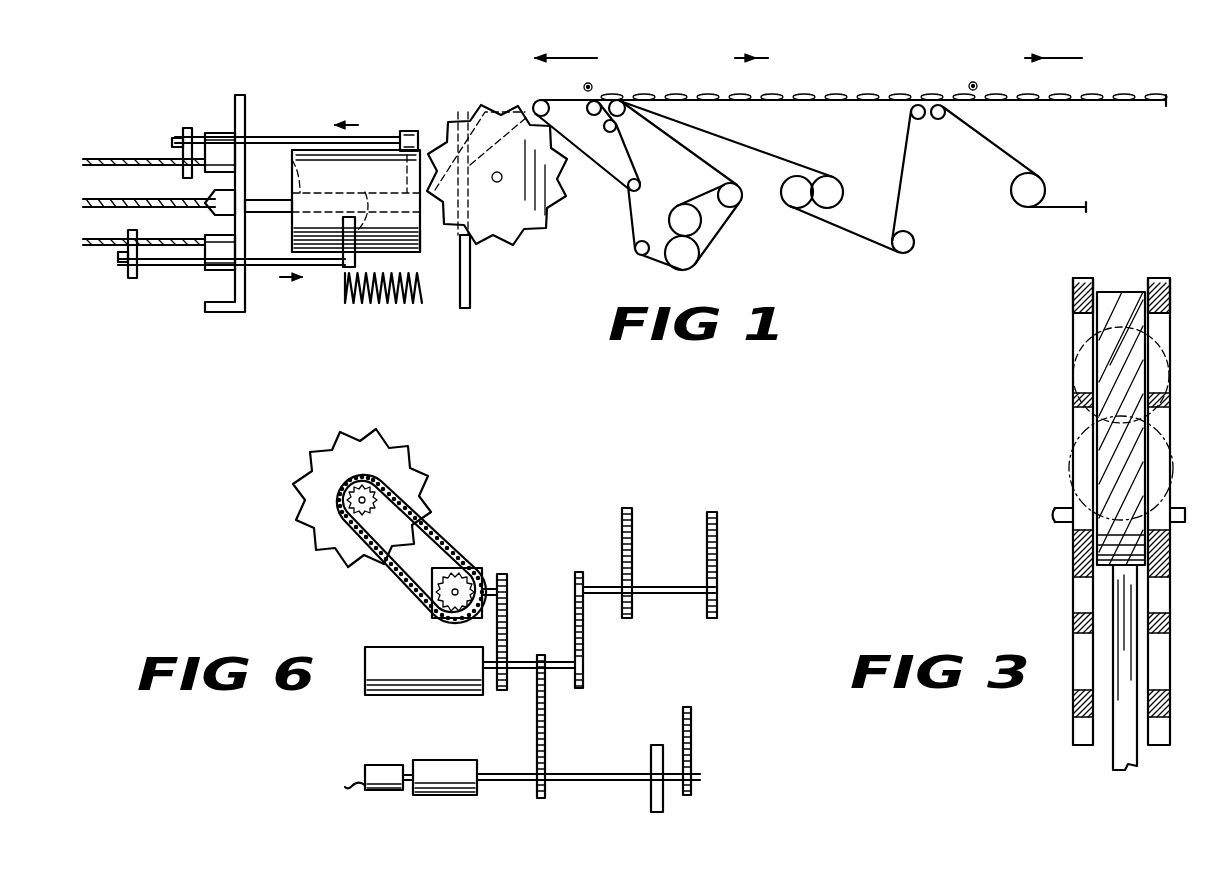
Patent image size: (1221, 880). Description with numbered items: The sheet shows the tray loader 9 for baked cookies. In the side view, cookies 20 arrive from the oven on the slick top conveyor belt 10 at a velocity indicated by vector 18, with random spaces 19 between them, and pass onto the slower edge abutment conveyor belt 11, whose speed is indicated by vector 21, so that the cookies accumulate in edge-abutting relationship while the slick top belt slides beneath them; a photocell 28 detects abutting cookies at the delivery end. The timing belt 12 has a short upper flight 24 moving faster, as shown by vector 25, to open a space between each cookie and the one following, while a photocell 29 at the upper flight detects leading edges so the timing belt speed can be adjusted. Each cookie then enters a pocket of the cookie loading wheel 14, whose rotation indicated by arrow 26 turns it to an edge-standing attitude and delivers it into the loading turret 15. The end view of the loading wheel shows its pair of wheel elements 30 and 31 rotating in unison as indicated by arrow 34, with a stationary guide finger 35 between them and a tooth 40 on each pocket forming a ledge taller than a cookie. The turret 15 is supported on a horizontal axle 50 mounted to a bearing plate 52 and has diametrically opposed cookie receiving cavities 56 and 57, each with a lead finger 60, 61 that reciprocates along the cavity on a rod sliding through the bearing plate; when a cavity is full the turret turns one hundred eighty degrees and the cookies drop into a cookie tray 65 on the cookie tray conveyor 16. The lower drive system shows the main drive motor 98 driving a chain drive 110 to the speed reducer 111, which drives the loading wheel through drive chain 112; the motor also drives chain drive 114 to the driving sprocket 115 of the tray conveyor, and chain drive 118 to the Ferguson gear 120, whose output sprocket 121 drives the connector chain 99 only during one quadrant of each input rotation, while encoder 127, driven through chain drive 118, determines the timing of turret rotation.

In FIG. 1, the tray loader 9 is at (490, 90).
In FIG. 1, the slick top conveyor belt 10 is at (990, 180).
In FIG. 1, the edge abutment conveyor belt 11 is at (842, 236).
In FIG. 1, the timing belt 12 is at (616, 168).
In FIG. 1, the cookie loading wheel 14 is at (549, 219).
In FIG. 6, the cookie loading wheel 14 is at (432, 478).
In FIG. 1, the loading turret 15 is at (318, 150).
In FIG. 1, the cookie tray conveyor 16 is at (402, 318).
In FIG. 6, the cookie tray conveyor 16 is at (718, 547).
In FIG. 1, the velocity vector 18 is at (1058, 62).
In FIG. 1, the random spaces 19 is at (1114, 100).
In FIG. 1, the cookies 20 is at (823, 98).
In FIG. 3, the cookies 20 is at (1160, 452).
In FIG. 1, the velocity vector 21 is at (757, 62).
In FIG. 1, the upper flight 24 is at (534, 103).
In FIG. 1, the velocity vector 25 is at (566, 62).
In FIG. 1, the arrow 26 is at (478, 160).
In FIG. 1, the photocell 28 is at (969, 88).
In FIG. 1, the photocell 29 is at (592, 88).
In FIG. 3, the wheel element 30 is at (1168, 325).
In FIG. 3, the wheel element 31 is at (1074, 323).
In FIG. 6, the arrow 34 is at (287, 447).
In FIG. 3, the stationary guide finger 35 is at (1135, 388).
In FIG. 3, the tooth 40 is at (1074, 287).
In FIG. 1, the horizontal axle 50 is at (259, 212).
In FIG. 1, the bearing plate 52 is at (246, 103).
In FIG. 1, the cookie receiving cavity 56 is at (300, 183).
In FIG. 1, the cookie receiving cavity 57 is at (412, 248).
In FIG. 1, the lead finger 60 is at (407, 131).
In FIG. 1, the lead finger 61 is at (362, 200).
In FIG. 1, the cookie tray 65 is at (368, 306).
In FIG. 6, the main drive motor 98 is at (385, 650).
In FIG. 6, the connector chain 99 is at (692, 715).
In FIG. 6, the chain drive 110 is at (507, 648).
In FIG. 6, the speed reducer 111 is at (432, 616).
In FIG. 6, the drive chain 112 is at (442, 548).
In FIG. 6, the chain drive 114 is at (575, 622).
In FIG. 6, the driving sprocket 115 is at (577, 578).
In FIG. 6, the chain drive 118 is at (546, 741).
In FIG. 6, the Ferguson gear 120 is at (650, 800).
In FIG. 6, the output sprocket 121 is at (692, 781).
In FIG. 6, the encoder 127 is at (381, 765).